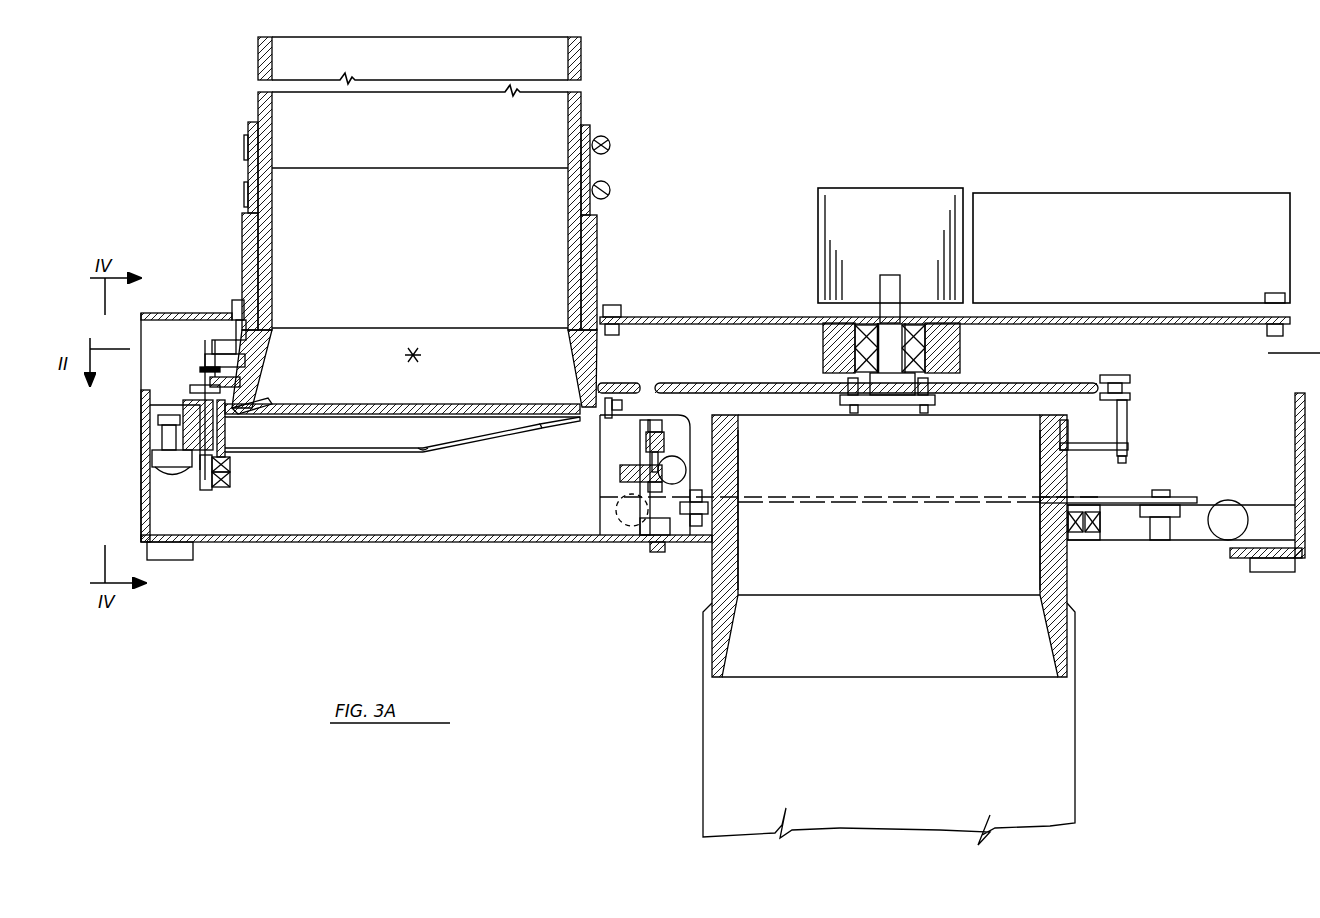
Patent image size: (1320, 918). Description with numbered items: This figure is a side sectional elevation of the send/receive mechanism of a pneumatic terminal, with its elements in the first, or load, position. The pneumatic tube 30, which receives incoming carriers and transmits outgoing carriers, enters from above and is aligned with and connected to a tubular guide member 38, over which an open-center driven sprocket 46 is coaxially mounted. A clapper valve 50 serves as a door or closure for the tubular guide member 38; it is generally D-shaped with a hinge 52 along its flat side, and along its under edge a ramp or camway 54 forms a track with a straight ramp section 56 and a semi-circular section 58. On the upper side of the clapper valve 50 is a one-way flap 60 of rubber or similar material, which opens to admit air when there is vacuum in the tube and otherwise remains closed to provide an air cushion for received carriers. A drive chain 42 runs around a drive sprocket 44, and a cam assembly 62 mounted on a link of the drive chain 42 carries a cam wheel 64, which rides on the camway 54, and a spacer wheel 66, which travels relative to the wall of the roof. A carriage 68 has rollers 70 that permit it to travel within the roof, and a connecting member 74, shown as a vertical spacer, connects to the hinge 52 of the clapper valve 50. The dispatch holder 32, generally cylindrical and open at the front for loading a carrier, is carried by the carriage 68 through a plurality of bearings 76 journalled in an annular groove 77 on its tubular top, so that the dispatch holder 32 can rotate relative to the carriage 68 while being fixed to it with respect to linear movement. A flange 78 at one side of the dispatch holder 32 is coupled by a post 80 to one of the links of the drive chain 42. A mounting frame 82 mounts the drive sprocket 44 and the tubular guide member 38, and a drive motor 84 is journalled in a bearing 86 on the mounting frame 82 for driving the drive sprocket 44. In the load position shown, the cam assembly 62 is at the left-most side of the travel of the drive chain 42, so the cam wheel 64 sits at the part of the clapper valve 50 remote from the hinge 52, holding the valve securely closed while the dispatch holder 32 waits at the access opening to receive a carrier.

The pneumatic tube 30 is at (585, 118).
The dispatch holder 32 is at (1063, 733).
The tubular guide member 38 is at (242, 270).
The drive chain 42 is at (200, 372).
The drive sprocket 44 is at (1045, 383).
The open-center driven sprocket 46 is at (605, 382).
The clapper valve 50 is at (535, 428).
The hinge 52 is at (598, 410).
The ramp or camway 54 is at (440, 455).
The straight ramp section 56 is at (490, 438).
The semi-circular section 58 is at (340, 452).
The one-way flap 60 is at (428, 404).
The cam assembly 62 is at (200, 455).
The cam wheel 64 is at (232, 485).
The spacer wheel 66 is at (168, 478).
The carriage 68 is at (1128, 497).
The rollers 70 is at (620, 540).
The connecting member 74 is at (650, 545).
The bearings 76 is at (690, 535).
The annular groove 77 is at (740, 515).
The flange 78 is at (1085, 443).
The post 80 is at (1128, 428).
The mounting frame 82 is at (760, 317).
The drive motor 84 is at (818, 238).
The bearing 86 is at (823, 353).